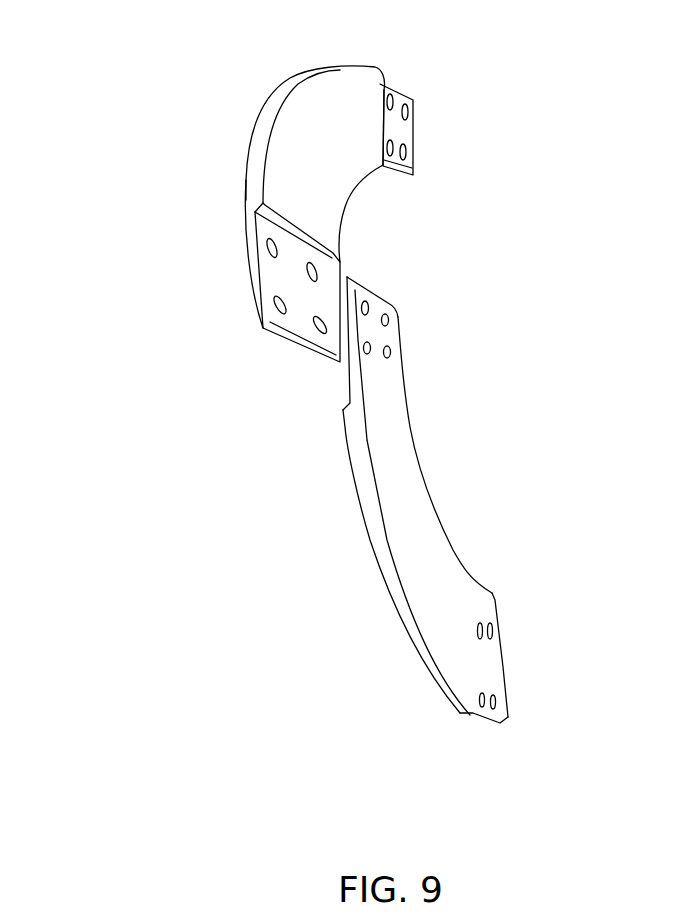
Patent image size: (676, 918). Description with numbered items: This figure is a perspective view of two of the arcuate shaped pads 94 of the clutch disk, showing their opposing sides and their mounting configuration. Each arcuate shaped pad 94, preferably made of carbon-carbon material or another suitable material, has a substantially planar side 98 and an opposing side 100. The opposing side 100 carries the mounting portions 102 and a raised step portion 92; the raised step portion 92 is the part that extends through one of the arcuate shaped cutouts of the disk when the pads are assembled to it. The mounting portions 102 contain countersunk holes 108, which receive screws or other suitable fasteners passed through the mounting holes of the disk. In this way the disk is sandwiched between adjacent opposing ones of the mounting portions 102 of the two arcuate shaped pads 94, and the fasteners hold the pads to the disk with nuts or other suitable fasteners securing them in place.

The raised step portion 92 is at (262, 188).
The arcuate shaped pad 94 is at (362, 202).
The substantially planar side 98 is at (248, 125).
The opposing side 100 is at (345, 223).
The mounting portion 102 is at (410, 135).
The countersunk hole 108 is at (405, 108).